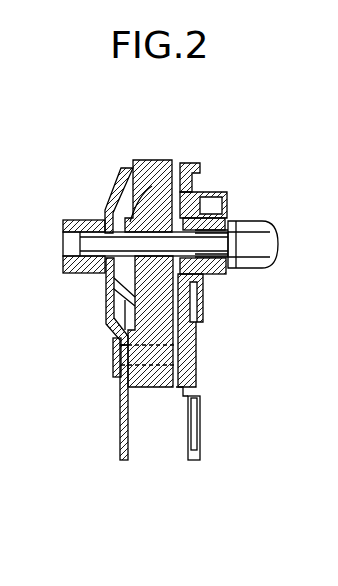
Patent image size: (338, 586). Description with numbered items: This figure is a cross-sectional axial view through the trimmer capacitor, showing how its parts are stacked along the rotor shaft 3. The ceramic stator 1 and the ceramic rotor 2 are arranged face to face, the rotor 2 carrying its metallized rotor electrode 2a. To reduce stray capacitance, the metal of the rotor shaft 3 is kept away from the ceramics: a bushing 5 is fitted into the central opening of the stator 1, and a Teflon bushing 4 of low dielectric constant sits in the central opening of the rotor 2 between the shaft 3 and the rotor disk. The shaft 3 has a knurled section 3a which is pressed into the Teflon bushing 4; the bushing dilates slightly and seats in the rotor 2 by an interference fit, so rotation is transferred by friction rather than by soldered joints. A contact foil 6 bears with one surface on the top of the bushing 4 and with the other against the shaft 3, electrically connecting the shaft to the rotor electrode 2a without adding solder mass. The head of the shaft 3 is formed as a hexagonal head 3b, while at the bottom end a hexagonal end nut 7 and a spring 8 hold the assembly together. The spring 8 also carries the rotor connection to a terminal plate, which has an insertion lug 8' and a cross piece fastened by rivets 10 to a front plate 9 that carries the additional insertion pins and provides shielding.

The stator 1 is at (150, 160).
The rotor 2 is at (202, 318).
The rotor electrode 2a is at (198, 175).
The rotor shaft 3 is at (103, 240).
The knurled section 3a is at (227, 263).
The hexagonal head 3b is at (276, 245).
The bushing 4 is at (230, 228).
The bushing 5 is at (148, 214).
The contact foil 6 is at (212, 200).
The end nut 7 is at (76, 273).
The spring 8 is at (128, 311).
The insertion lug 8' is at (102, 408).
The front plate 9 is at (199, 382).
The rivets 10 is at (114, 358).